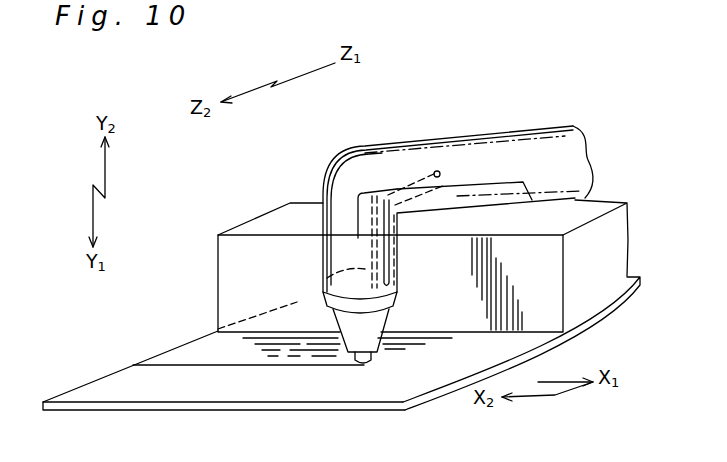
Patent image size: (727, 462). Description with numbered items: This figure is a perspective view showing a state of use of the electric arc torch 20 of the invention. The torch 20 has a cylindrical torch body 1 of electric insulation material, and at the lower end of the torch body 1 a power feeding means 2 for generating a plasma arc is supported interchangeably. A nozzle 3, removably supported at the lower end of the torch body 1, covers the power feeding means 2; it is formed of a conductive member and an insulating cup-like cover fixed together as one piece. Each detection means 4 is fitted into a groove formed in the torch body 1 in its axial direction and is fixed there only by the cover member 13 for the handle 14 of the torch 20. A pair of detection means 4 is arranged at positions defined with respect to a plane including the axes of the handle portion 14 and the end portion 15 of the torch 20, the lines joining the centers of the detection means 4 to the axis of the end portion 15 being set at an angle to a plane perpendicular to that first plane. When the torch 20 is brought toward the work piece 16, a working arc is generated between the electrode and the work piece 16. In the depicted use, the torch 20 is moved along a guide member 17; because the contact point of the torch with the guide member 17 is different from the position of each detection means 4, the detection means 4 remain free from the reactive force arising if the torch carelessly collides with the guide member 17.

The torch body 1 is at (327, 167).
The power feeding means 2 is at (375, 357).
The nozzle 3 is at (393, 316).
The detection means 4 is at (385, 262).
The cover member 13 is at (477, 182).
The handle 14 is at (533, 139).
The end portion 15 is at (322, 278).
The work piece 16 is at (200, 342).
The guide member 17 is at (222, 254).
The electric arc torch 20 is at (458, 183).